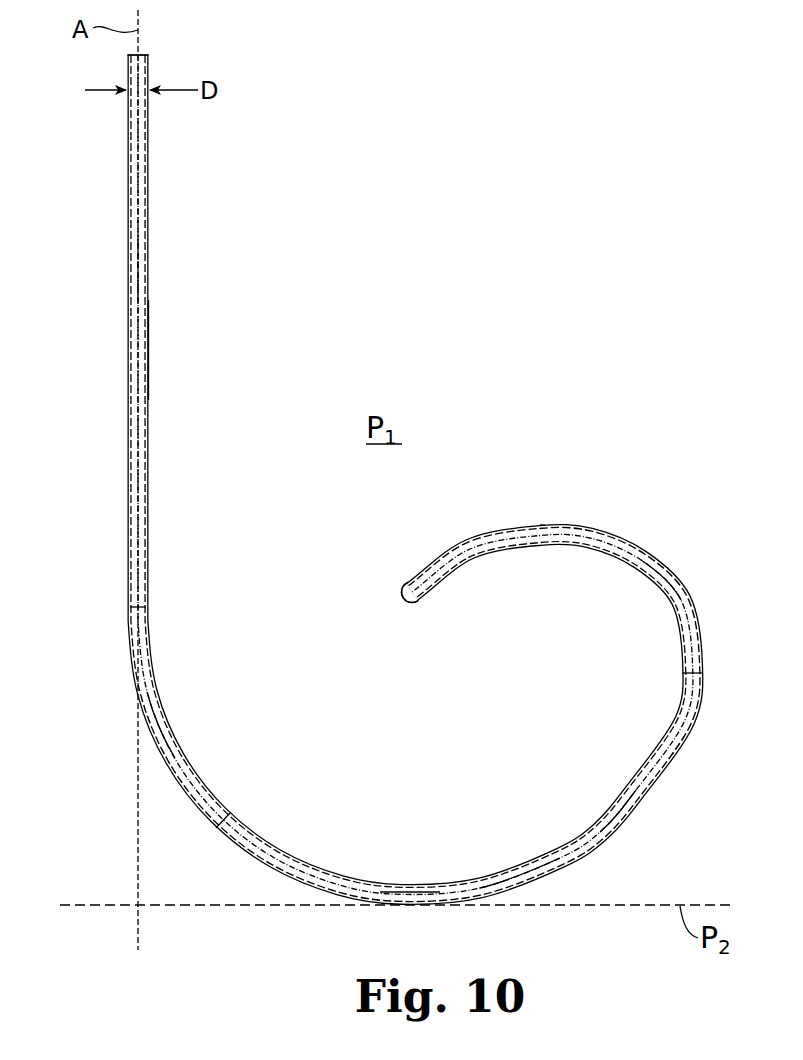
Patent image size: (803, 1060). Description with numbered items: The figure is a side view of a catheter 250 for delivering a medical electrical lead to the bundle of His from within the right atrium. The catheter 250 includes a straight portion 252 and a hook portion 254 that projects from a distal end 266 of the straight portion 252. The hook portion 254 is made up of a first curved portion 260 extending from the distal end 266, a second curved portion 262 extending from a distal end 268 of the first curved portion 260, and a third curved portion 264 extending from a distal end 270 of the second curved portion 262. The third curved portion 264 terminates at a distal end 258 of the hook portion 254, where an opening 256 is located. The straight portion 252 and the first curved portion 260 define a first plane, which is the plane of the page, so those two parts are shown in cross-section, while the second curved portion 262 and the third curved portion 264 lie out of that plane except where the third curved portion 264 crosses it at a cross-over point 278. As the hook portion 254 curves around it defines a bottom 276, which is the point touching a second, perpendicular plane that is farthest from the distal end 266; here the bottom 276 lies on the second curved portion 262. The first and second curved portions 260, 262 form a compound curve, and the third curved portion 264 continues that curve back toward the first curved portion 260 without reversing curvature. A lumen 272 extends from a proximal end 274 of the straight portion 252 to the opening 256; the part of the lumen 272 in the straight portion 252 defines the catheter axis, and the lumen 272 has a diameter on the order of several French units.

The catheter 250 is at (122, 225).
The straight portion 252 is at (152, 345).
The hook portion 254 is at (640, 818).
The opening 256 is at (410, 596).
The distal end of the hook portion 258 is at (407, 583).
The first curved portion 260 is at (172, 716).
The second curved portion 262 is at (546, 850).
The third curved portion 264 is at (623, 538).
The distal end of the straight portion 266 is at (149, 592).
The distal end of the first curved portion 268 is at (230, 812).
The distal end of the second curved portion 270 is at (705, 674).
The lumen 272 is at (140, 268).
The proximal end of the straight portion 274 is at (149, 55).
The bottom of the hook portion 276 is at (414, 906).
The cross-over point 278 is at (462, 541).